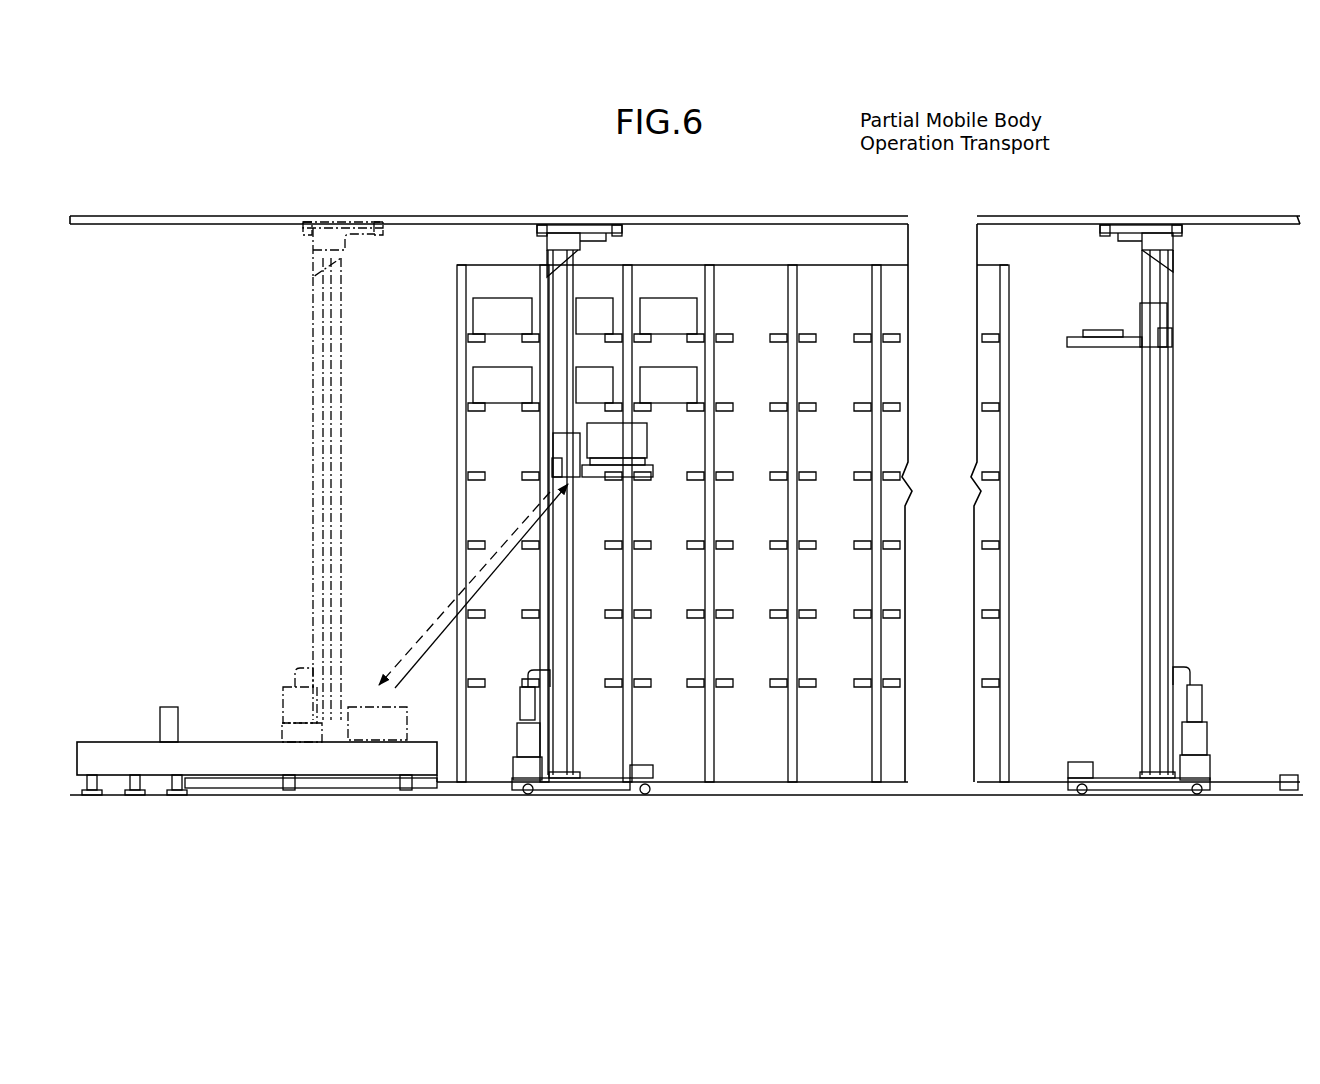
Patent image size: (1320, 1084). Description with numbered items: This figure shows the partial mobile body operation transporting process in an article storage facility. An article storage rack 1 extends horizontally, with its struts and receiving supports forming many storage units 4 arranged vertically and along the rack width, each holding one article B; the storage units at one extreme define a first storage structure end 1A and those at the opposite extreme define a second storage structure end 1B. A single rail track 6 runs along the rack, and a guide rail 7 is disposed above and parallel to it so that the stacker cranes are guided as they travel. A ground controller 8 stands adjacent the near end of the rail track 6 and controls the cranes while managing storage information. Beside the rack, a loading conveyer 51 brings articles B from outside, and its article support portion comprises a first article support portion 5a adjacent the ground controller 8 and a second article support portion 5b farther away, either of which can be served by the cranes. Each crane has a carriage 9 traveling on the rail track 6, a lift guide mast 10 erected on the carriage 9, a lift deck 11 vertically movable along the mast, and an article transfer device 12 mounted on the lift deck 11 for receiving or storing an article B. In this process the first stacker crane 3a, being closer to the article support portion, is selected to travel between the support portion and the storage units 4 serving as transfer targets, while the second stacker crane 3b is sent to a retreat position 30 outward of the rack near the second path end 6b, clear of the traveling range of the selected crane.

The article storage rack 1 is at (736, 264).
The first storage structure end 1A is at (463, 799).
The second storage structure end 1B is at (1008, 810).
The first stacker crane 3a is at (208, 478).
The second stacker crane 3b is at (1182, 590).
The storage unit 4 is at (862, 307).
The first article support portion 5a is at (282, 752).
The second article support portion 5b is at (372, 755).
The loading conveyer 51 is at (107, 765).
The rail track 6 is at (768, 790).
The second path end 6b is at (1287, 775).
The guide rail 7 is at (160, 217).
The ground controller 8 is at (170, 715).
The carriage 9 is at (610, 778).
The lift guide mast 10 is at (565, 580).
The lift deck 11 is at (596, 478).
The article transfer device 12 is at (618, 462).
The retreat position 30 is at (1105, 712).
The article B is at (490, 378).